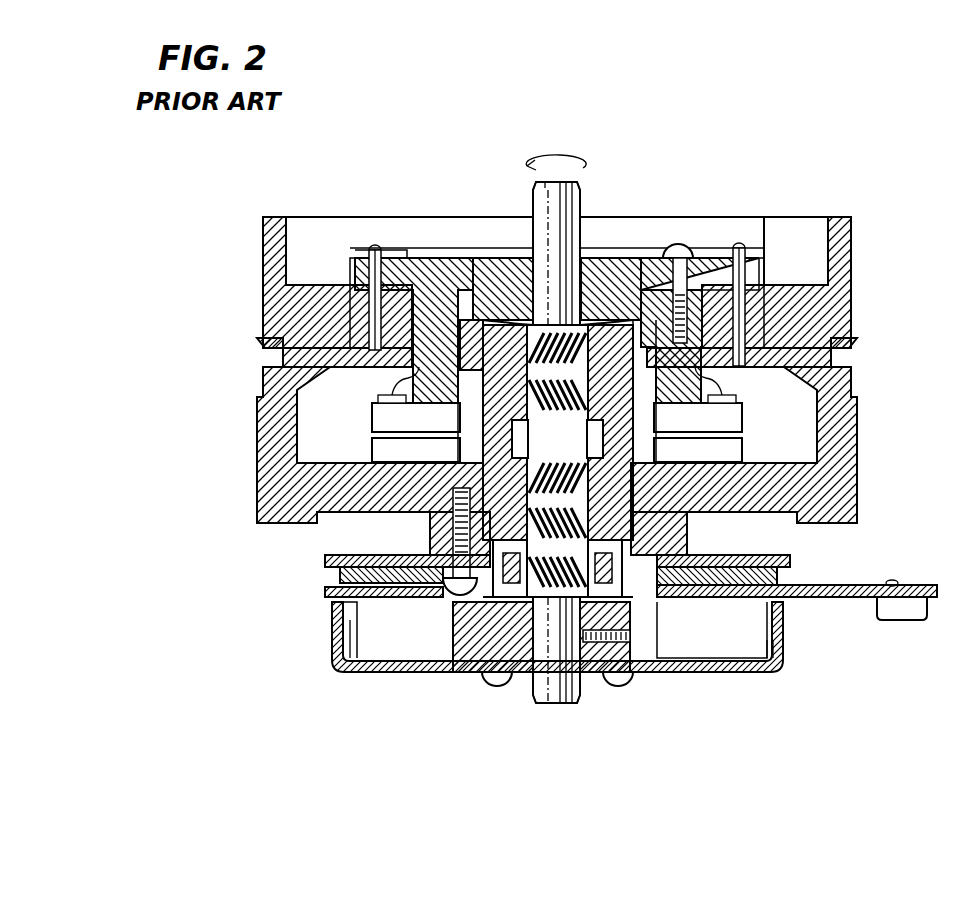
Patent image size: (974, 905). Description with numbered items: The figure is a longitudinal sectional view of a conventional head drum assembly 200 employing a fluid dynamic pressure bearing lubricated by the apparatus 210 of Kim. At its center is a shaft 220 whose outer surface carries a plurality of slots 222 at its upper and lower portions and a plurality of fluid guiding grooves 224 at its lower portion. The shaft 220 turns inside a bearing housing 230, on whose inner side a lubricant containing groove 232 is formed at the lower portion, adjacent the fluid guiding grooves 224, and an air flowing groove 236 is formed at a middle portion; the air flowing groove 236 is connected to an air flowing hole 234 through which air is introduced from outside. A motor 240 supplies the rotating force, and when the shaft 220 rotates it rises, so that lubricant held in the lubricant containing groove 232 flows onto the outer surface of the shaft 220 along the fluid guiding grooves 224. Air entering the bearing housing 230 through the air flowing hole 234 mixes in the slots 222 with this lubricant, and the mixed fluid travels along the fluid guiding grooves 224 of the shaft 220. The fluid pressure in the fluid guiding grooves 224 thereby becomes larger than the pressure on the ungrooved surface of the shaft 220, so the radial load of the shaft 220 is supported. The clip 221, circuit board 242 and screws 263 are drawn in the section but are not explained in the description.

The head drum assembly 200 is at (793, 108).
The apparatus 210 is at (423, 280).
The shaft 220 is at (532, 210).
The retaining clip 221 is at (852, 343).
The slots 222 is at (600, 460).
The fluid guiding grooves 224 is at (513, 317).
The bearing housing 230 is at (660, 255).
The lubricant containing groove 232 is at (700, 553).
The air flowing hole 234 is at (603, 437).
The air flowing groove 236 is at (603, 450).
The motor 240 is at (800, 655).
The printed circuit board 242 is at (800, 592).
The screw 263 is at (447, 283).